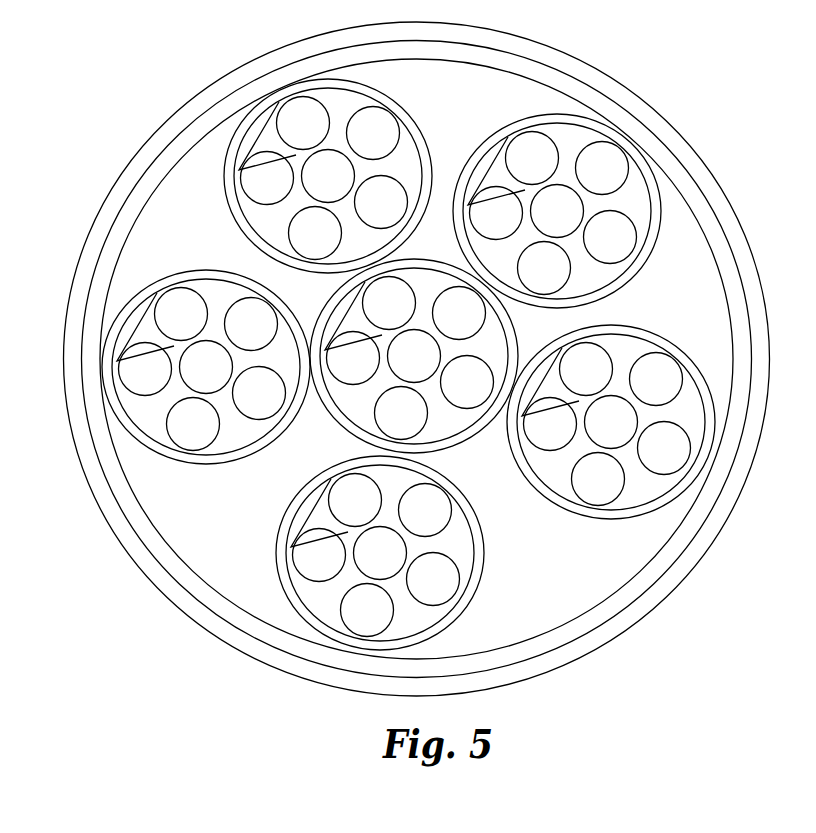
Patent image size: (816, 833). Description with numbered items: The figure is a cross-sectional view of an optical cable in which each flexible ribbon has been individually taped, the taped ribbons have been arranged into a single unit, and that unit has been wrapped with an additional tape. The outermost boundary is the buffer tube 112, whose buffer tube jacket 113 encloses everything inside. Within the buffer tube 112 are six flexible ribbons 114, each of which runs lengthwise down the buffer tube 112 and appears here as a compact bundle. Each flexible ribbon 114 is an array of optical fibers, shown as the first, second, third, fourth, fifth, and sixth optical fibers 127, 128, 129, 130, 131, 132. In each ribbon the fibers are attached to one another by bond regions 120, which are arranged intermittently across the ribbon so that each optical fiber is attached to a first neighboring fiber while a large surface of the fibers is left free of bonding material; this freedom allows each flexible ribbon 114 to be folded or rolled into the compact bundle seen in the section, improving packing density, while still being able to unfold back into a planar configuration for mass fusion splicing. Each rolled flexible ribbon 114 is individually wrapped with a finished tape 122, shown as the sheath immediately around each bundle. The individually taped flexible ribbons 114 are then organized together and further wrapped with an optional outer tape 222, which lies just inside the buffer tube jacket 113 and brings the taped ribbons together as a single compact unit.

The buffer tube 112 is at (96, 155).
The buffer tube jacket 113 is at (176, 114).
The outer tape 222 is at (440, 67).
The bond regions 120 is at (171, 336).
The finished tape 122 is at (167, 275).
The flexible ribbon 114 is at (225, 278).
The first optical fiber 127 is at (348, 367).
The second optical fiber 128 is at (384, 312).
The third optical fiber 129 is at (454, 322).
The fourth optical fiber 130 is at (462, 391).
The fifth optical fiber 131 is at (396, 422).
The sixth optical fiber 132 is at (409, 365).